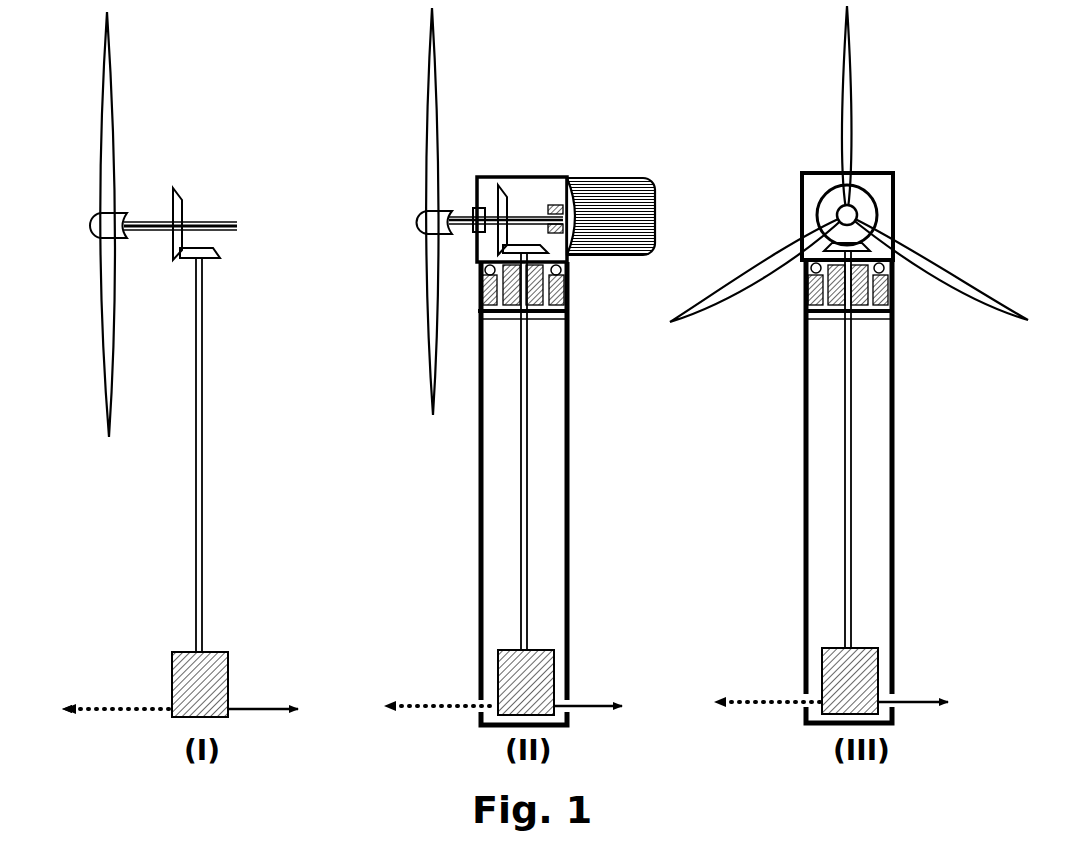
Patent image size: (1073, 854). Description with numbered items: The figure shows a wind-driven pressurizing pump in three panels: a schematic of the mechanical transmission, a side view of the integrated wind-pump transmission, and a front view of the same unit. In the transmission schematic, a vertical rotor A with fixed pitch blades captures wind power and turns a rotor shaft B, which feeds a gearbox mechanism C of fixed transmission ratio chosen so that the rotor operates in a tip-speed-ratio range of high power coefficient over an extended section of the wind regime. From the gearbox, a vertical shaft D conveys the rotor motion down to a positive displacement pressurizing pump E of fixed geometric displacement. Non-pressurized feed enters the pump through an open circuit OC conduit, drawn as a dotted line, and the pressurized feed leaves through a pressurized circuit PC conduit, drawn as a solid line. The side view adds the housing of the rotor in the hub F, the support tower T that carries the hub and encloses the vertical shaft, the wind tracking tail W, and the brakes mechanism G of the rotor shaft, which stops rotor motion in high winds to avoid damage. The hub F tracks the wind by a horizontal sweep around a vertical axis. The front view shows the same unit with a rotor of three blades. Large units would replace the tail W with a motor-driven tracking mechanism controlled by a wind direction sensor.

The vertical rotor A is at (93, 224).
The rotor shaft B is at (191, 227).
The gearbox mechanism C is at (183, 239).
The vertical shaft D is at (212, 455).
The positive displacement pressurizing pump E is at (200, 684).
The hub F is at (522, 202).
The brakes mechanism of the rotor shaft G is at (530, 219).
The wind tracking tail W is at (611, 238).
The support tower T is at (538, 493).
The open circuit conduit OC is at (116, 695).
The pressurized circuit conduit PC is at (263, 692).